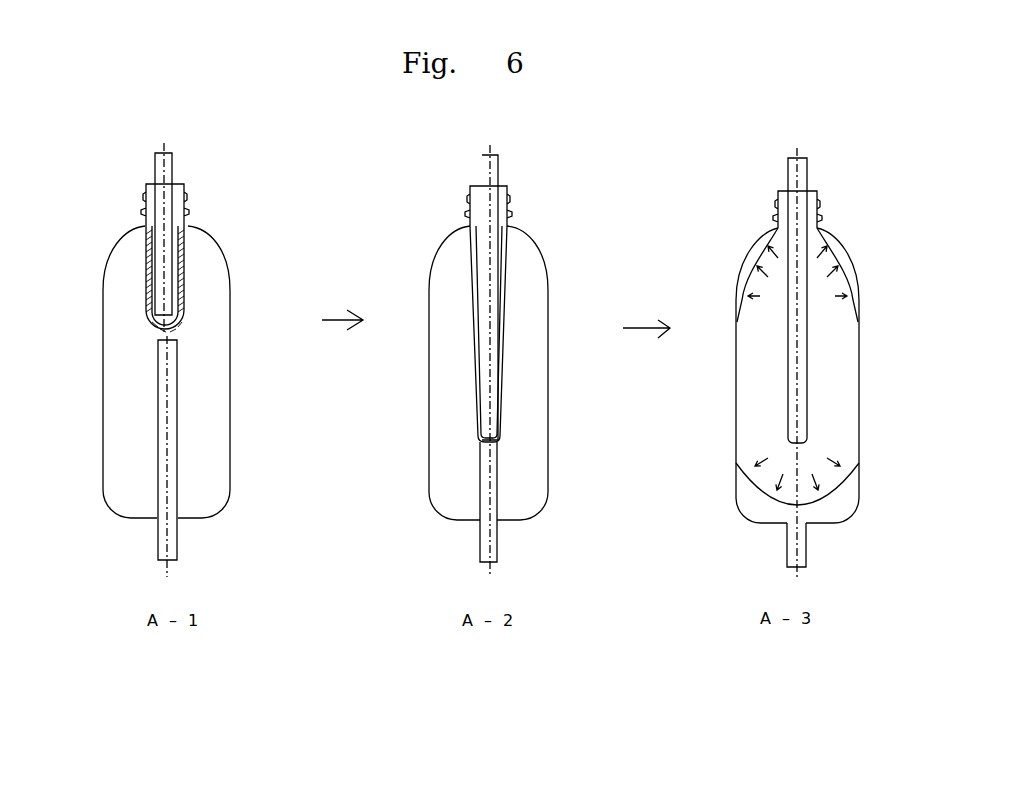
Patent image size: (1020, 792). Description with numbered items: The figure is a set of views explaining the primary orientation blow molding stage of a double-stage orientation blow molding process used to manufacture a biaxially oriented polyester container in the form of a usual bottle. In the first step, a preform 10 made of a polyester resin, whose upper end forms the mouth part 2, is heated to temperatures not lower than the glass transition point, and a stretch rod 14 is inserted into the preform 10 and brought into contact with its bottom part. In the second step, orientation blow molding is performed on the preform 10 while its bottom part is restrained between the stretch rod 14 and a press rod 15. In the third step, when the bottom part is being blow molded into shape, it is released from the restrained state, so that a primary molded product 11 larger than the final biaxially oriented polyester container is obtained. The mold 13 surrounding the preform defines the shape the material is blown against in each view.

The stretch rod 14 is at (160, 163).
The mouth part 2 is at (183, 193).
The preform 10 is at (184, 256).
The blow mold 13 is at (230, 393).
The press rod 15 is at (178, 490).
The primary molded product 11 is at (743, 484).